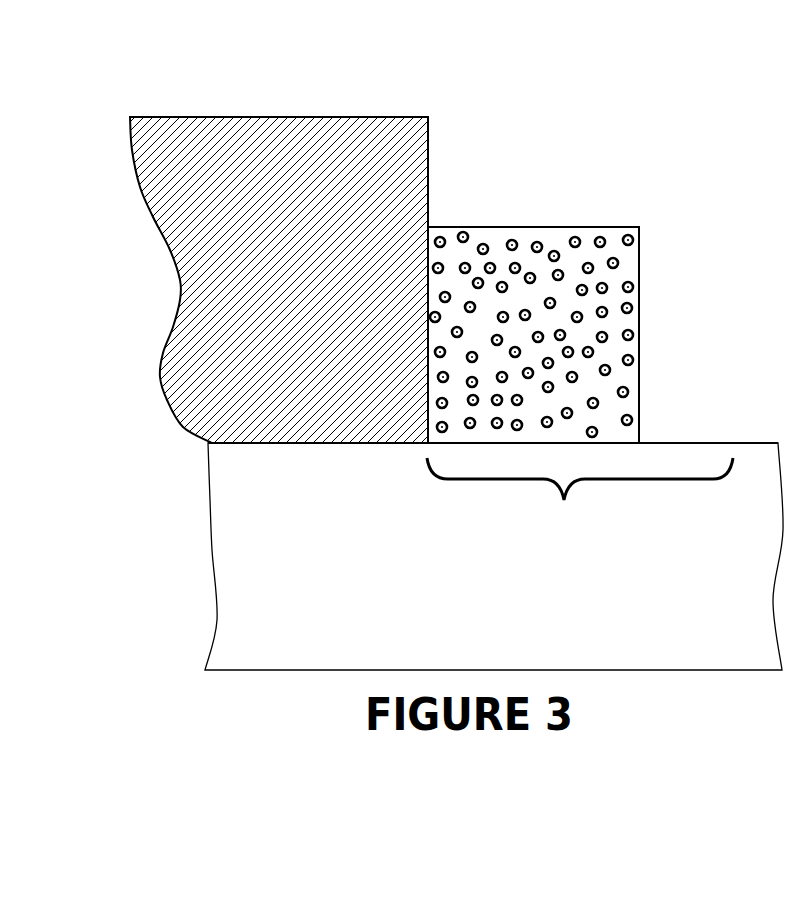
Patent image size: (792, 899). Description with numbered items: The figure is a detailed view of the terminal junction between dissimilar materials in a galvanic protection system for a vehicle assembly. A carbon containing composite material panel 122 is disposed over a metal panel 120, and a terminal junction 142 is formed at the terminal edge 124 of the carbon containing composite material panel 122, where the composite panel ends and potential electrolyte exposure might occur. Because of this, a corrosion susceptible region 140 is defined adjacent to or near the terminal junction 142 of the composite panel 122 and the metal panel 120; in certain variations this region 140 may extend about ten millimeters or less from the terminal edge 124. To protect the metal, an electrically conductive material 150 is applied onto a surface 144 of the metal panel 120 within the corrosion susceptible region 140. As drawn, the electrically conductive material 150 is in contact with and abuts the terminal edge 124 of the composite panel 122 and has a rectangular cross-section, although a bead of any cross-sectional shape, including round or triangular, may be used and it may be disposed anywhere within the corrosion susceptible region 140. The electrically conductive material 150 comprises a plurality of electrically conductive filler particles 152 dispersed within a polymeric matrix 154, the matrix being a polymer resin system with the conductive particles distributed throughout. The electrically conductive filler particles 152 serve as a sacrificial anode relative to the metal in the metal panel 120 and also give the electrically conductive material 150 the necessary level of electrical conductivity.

The metal panel 120 is at (323, 520).
The carbon containing composite material panel 122 is at (305, 271).
The terminal edge 124 is at (428, 150).
The corrosion susceptible region 140 is at (580, 498).
The terminal junction 142 is at (420, 447).
The surface 144 is at (682, 441).
The electrically conductive material 150 is at (639, 226).
The electrically conductive filler particles 152 is at (625, 303).
The polymeric matrix 154 is at (613, 240).